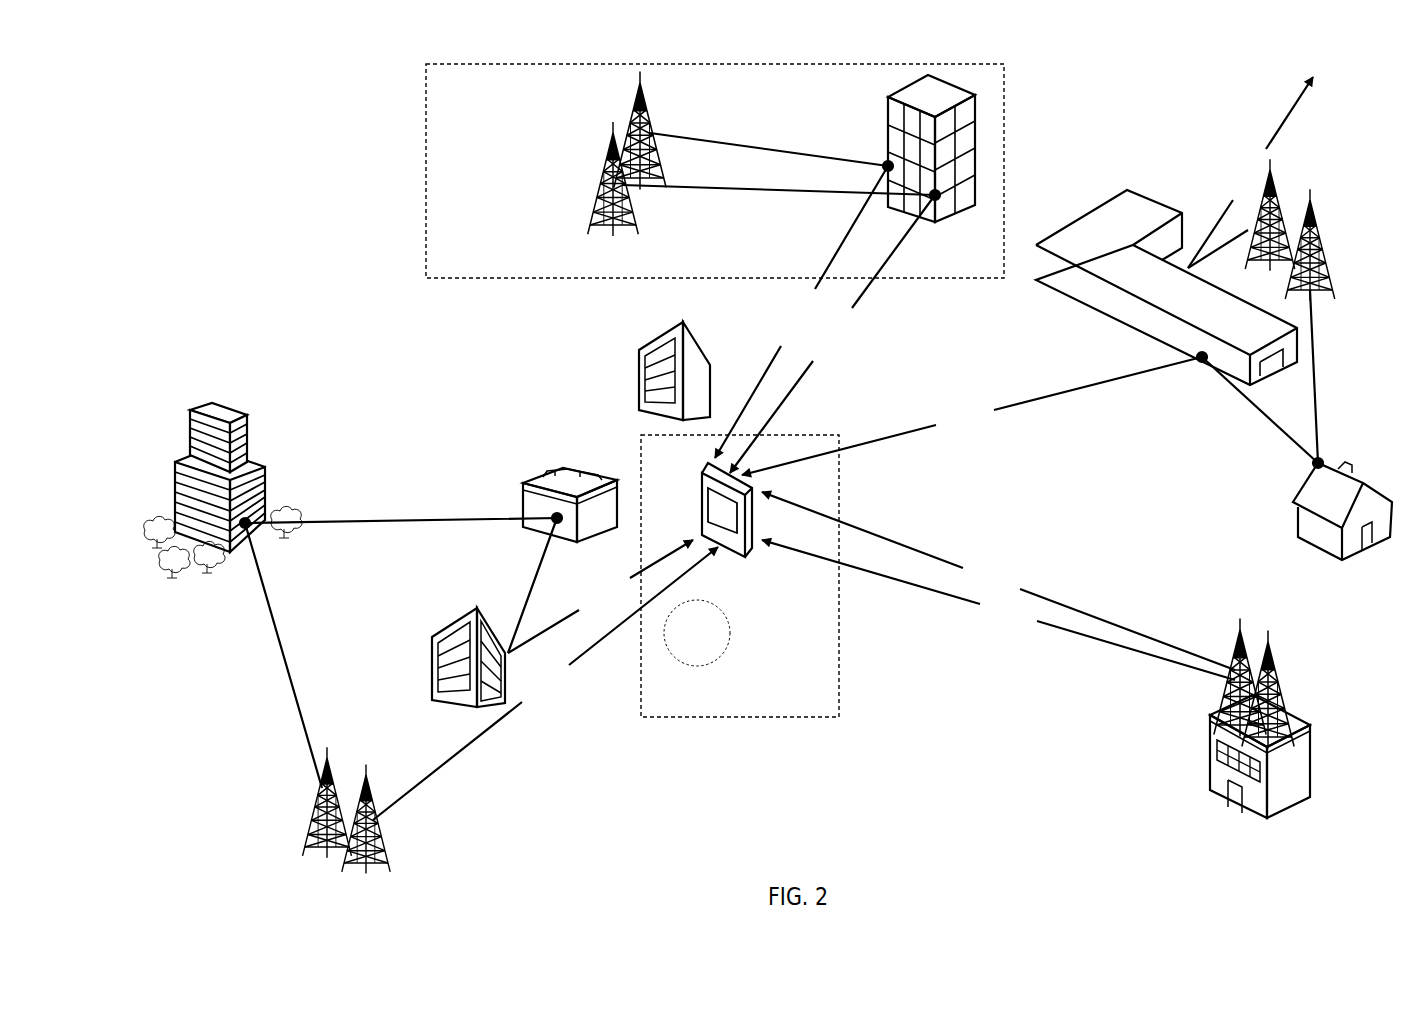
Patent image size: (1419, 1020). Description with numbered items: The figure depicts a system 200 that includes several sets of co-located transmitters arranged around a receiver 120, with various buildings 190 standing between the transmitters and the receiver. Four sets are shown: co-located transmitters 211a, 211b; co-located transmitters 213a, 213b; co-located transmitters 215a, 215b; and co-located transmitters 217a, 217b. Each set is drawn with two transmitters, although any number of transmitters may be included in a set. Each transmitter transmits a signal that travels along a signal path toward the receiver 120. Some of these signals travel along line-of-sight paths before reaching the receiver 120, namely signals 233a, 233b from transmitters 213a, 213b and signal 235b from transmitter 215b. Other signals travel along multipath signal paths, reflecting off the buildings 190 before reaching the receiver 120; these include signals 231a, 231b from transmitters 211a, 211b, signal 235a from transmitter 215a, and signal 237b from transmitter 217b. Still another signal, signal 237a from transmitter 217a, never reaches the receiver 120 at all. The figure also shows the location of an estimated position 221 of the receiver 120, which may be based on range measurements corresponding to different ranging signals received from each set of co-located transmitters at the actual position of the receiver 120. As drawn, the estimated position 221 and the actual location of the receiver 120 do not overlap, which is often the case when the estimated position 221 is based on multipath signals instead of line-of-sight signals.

The system 200 is at (205, 103).
The receiver 120 is at (755, 547).
The building / obstruction 190 is at (888, 108).
The co-located transmitter 211a is at (611, 160).
The co-located transmitter 211b is at (637, 114).
The co-located transmitter 213a is at (1246, 632).
The co-located transmitter 213b is at (1276, 666).
The co-located transmitter 215a is at (322, 787).
The co-located transmitter 215b is at (379, 831).
The co-located transmitter 217a is at (1271, 190).
The co-located transmitter 217b is at (1313, 224).
The estimated position 221 is at (737, 638).
The signal 231a is at (832, 334).
The signal 231b is at (801, 312).
The signal 233a is at (998, 581).
The signal 233b is at (998, 610).
The signal 235a is at (600, 596).
The signal 235b is at (545, 683).
The signal 237a is at (1250, 172).
The signal 237b is at (972, 416).